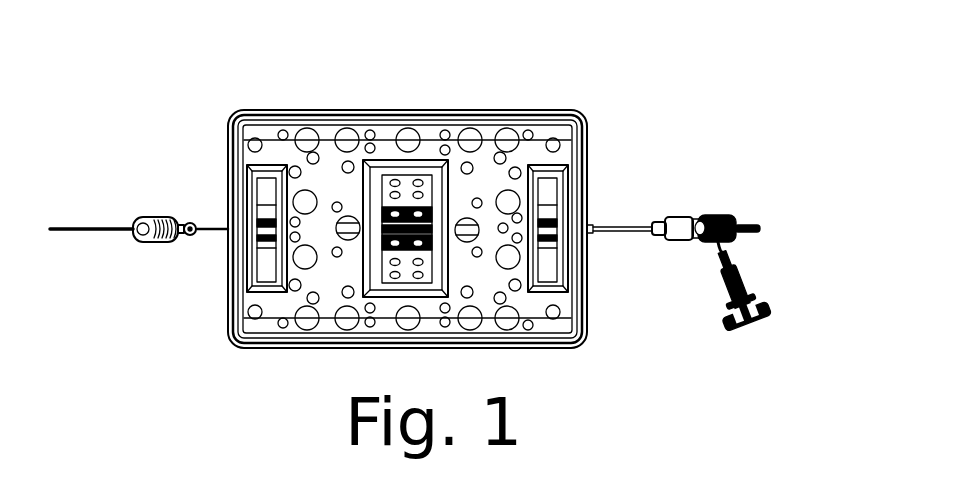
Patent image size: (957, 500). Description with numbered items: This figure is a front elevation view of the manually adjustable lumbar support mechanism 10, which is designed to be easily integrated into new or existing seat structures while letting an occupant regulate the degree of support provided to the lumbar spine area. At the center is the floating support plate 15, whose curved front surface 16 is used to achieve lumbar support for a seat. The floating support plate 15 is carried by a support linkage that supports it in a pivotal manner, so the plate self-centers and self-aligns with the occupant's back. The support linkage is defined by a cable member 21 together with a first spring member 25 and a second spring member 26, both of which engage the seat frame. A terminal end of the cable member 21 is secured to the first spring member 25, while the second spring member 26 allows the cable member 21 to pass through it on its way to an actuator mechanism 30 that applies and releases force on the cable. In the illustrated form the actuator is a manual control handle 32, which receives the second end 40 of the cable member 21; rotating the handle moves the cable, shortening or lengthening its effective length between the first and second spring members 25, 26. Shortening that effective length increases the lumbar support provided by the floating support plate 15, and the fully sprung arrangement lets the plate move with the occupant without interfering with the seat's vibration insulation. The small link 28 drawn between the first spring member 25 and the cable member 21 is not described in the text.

The adjustable lumbar support mechanism 10 is at (290, 72).
The floating support plate 15 is at (421, 108).
The curved front surface 16 is at (483, 162).
The cable member 21 is at (213, 226).
The first spring member 25 is at (143, 215).
The swivel link 28 is at (198, 235).
The second spring member 26 is at (730, 220).
The second end 40 is at (742, 260).
The actuator mechanism 30 is at (777, 305).
The manual control handle 32 is at (758, 345).